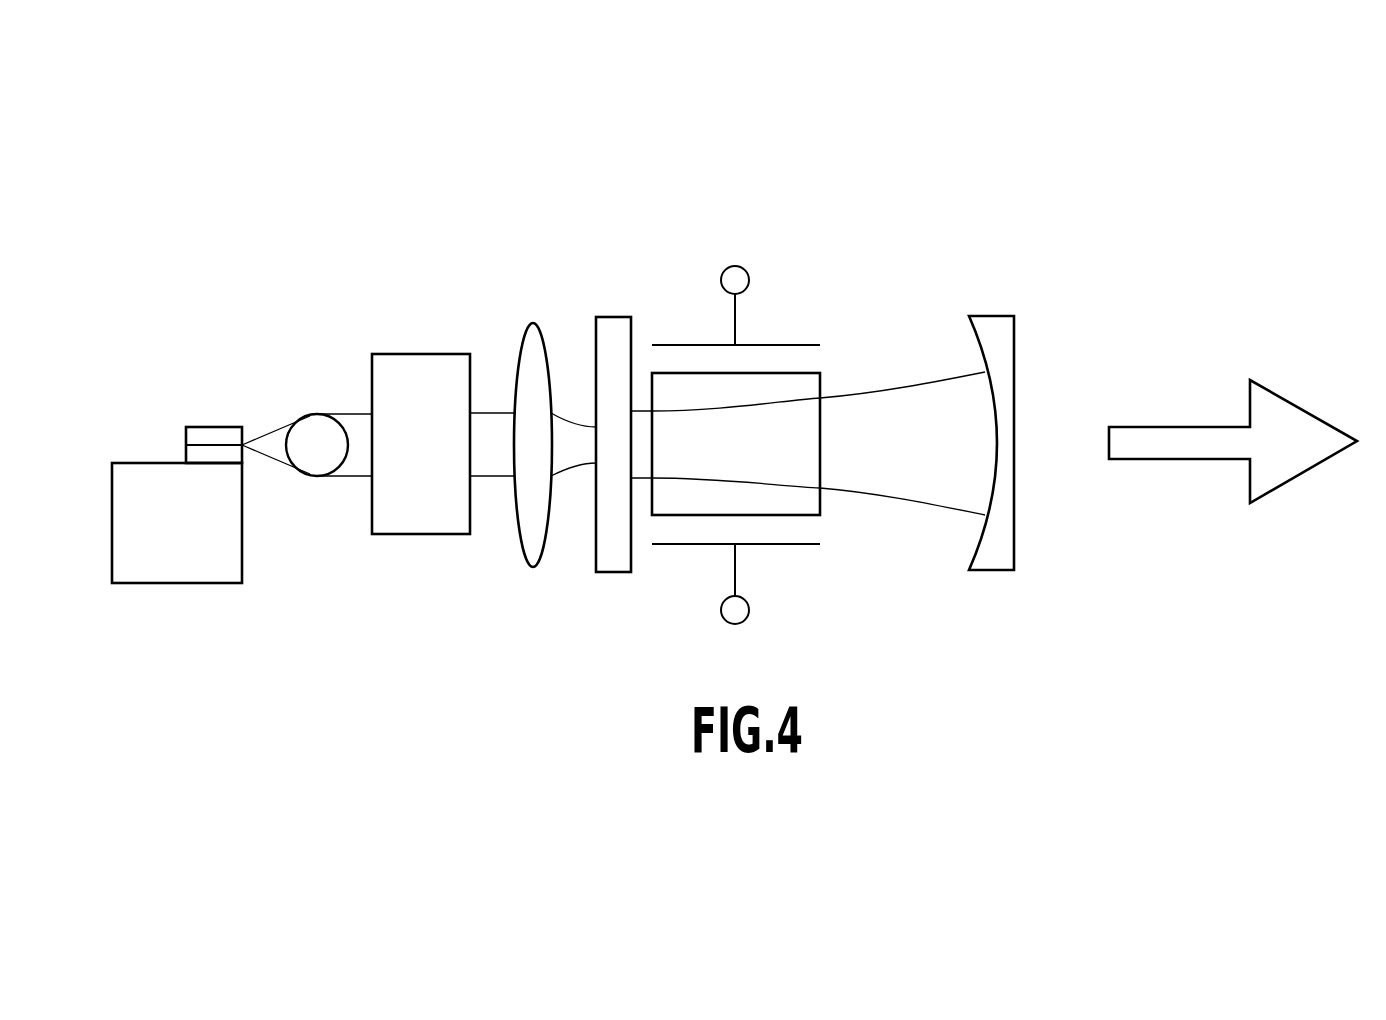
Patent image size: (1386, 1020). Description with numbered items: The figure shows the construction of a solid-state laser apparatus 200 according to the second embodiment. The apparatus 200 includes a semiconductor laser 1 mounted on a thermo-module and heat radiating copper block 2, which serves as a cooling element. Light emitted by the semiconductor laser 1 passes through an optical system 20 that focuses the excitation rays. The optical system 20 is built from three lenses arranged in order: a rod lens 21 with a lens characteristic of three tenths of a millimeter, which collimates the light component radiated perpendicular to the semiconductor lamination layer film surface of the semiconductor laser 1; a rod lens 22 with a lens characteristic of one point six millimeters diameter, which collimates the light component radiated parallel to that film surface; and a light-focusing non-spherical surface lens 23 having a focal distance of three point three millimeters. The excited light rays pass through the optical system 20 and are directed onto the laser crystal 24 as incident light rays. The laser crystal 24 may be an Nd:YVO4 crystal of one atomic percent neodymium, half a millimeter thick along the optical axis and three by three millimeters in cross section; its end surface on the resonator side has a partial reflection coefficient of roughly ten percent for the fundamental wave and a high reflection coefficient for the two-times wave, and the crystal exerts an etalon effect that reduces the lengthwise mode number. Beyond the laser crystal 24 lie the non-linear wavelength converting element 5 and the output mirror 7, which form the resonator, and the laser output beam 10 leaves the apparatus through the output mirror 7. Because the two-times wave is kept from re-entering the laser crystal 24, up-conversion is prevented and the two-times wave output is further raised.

The solid-state laser apparatus 200 is at (560, 165).
The semiconductor laser 1 is at (210, 427).
The thermo-module/heat radiating copper block 2 is at (163, 584).
The optical system 20 is at (436, 515).
The rod lens 21 is at (315, 477).
The rod lens 22 is at (412, 535).
The light-focusing non-spherical surface lens 23 is at (512, 474).
The laser crystal 24 is at (621, 573).
The non-linear wavelength converting element 5 is at (793, 545).
The output mirror 7 is at (1002, 572).
The laser beam 10 is at (1145, 459).